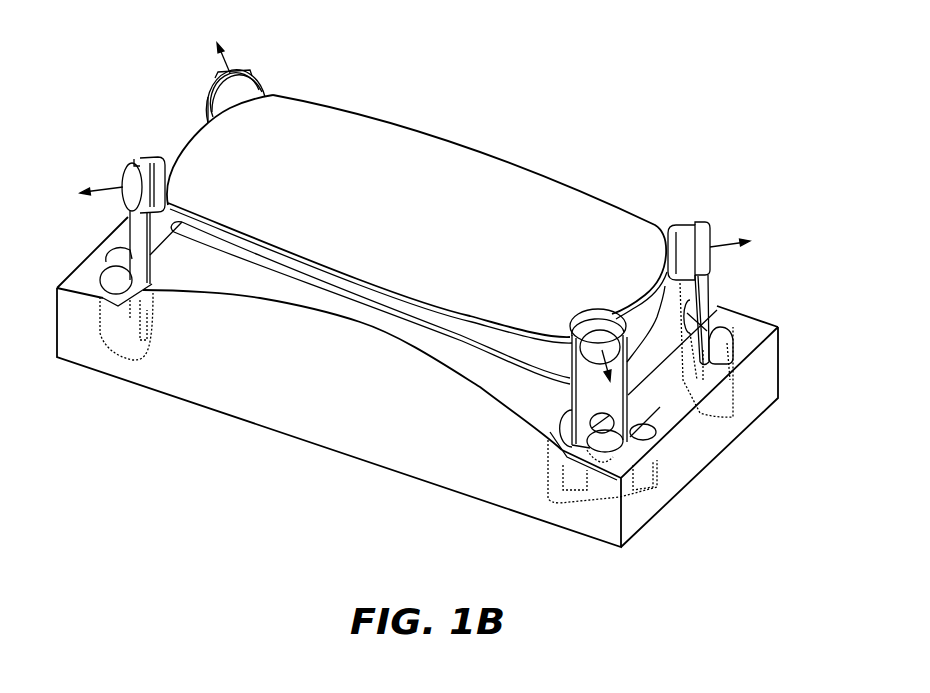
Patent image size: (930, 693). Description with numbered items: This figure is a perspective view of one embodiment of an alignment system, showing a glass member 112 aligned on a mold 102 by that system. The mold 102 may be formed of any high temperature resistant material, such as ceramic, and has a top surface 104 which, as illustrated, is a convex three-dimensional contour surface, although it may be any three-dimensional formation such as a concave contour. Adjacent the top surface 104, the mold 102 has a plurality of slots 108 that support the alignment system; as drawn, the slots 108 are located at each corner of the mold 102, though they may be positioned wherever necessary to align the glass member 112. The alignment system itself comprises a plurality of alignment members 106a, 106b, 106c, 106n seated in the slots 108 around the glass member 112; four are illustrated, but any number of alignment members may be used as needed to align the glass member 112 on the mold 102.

The mold 102 is at (288, 412).
The top surface 104 is at (457, 350).
The alignment member 106a is at (709, 291).
The alignment member 106b is at (566, 388).
The alignment member 106c is at (208, 98).
The alignment member 106n is at (147, 237).
The slots 108 is at (117, 253).
The glass member 112 is at (452, 177).